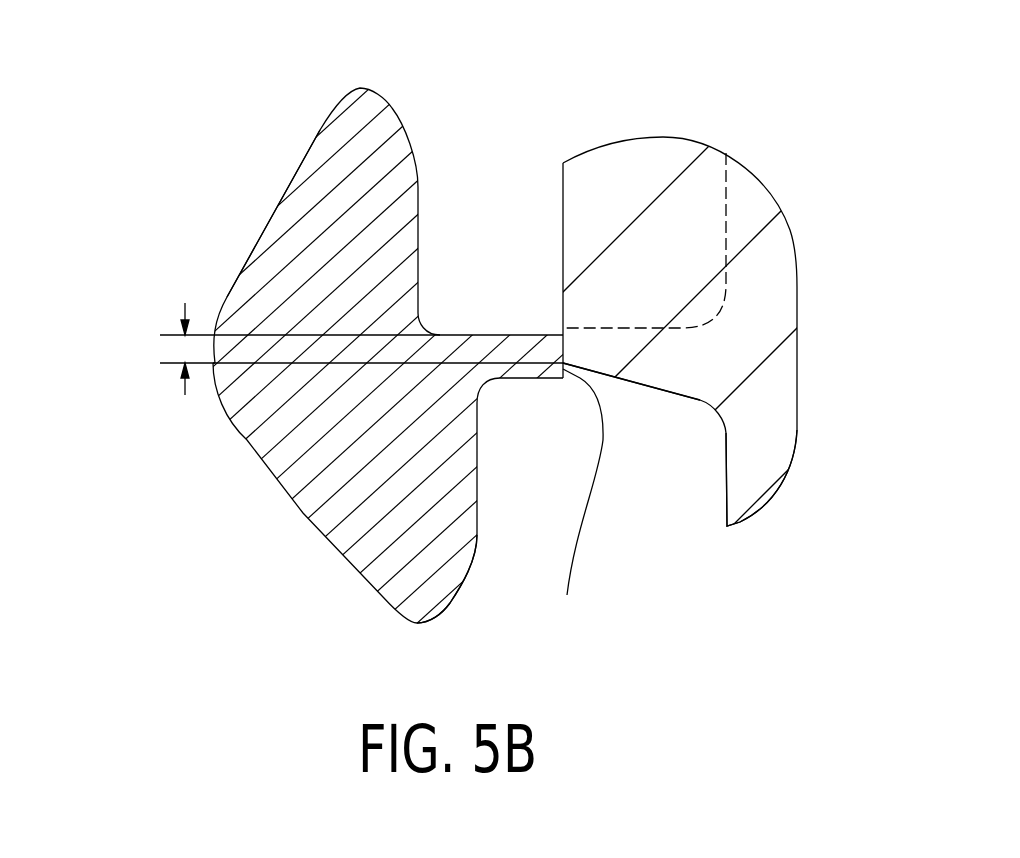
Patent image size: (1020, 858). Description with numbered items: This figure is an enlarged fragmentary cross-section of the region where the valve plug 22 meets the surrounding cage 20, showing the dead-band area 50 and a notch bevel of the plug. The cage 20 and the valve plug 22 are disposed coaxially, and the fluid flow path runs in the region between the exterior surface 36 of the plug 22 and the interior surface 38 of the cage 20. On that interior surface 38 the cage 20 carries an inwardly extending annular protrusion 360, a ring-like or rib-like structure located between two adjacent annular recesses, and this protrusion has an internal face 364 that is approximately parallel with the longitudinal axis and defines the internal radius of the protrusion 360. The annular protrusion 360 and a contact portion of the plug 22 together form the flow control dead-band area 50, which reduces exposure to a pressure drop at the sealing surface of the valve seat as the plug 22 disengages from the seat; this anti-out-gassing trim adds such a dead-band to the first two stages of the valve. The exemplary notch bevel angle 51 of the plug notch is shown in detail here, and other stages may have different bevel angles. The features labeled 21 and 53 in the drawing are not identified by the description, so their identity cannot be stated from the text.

The cage 20 is at (330, 480).
The upper lip of seal 21 is at (337, 207).
The valve plug 22 is at (723, 177).
The exterior surface 36 is at (727, 475).
The interior surface 38 is at (477, 483).
The dead-band area 50 is at (180, 350).
The notch bevel angle 51 is at (676, 396).
The corner edge of retaining member 53 is at (560, 347).
The annular protrusion 360 is at (507, 347).
The internal face 364 is at (570, 510).